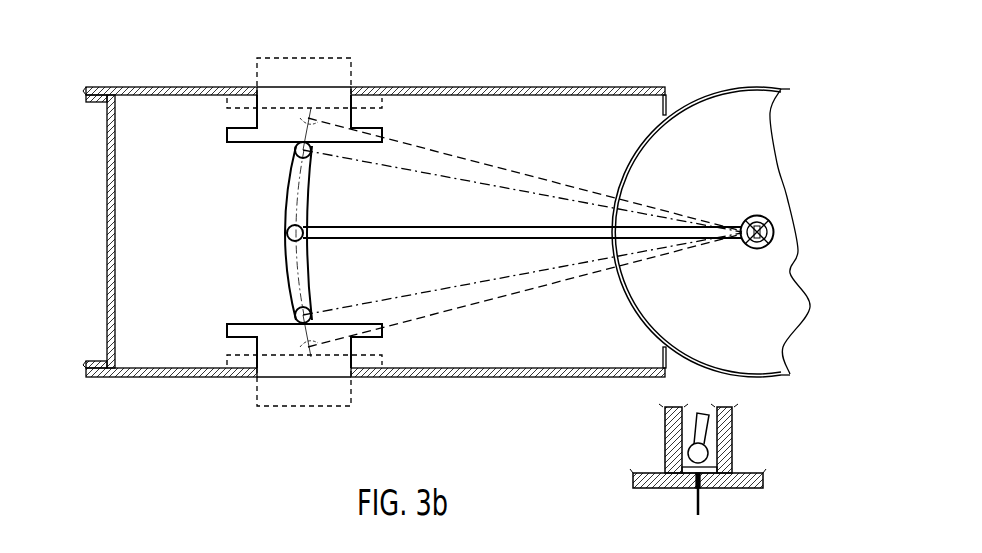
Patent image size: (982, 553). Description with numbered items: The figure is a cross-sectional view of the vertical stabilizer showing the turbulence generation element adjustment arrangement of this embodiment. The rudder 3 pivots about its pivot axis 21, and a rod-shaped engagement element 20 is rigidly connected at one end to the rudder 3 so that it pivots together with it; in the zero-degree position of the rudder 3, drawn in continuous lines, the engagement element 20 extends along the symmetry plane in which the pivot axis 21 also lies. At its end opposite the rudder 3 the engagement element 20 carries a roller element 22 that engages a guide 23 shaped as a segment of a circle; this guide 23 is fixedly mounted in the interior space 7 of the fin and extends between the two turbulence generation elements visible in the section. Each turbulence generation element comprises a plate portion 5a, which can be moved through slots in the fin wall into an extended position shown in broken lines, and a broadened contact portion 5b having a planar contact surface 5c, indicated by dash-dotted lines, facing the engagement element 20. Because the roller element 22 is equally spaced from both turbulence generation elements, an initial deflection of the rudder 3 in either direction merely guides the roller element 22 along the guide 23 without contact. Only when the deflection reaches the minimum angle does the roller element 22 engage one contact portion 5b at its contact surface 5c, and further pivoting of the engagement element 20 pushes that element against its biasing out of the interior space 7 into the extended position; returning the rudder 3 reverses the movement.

The rudder 3 is at (753, 98).
The plate portion 5a is at (257, 70).
The contact portion 5b is at (227, 136).
The contact surface 5c is at (272, 120).
The interior space 7 is at (604, 348).
The rod-shaped engagement element 20 is at (496, 166).
The pivot axis 21 is at (750, 219).
The roller element 22 is at (287, 233).
The guide 23 is at (285, 274).